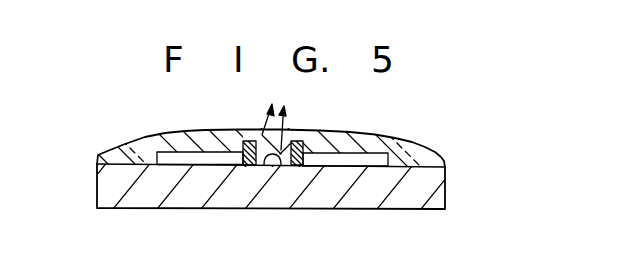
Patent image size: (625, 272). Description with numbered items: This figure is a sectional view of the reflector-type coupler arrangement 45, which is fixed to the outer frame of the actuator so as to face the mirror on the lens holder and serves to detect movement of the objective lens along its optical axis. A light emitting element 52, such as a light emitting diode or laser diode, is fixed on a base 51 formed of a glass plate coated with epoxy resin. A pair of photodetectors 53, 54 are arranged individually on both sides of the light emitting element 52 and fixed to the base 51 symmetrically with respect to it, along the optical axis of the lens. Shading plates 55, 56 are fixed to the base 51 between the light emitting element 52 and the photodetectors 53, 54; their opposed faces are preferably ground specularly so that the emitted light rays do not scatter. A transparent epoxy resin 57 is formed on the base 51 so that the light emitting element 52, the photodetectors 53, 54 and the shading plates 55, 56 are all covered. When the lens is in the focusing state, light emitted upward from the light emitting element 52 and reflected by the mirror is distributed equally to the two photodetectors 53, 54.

The coupler arrangement 45 is at (415, 135).
The base 51 is at (434, 191).
The light emitting element 52 is at (272, 165).
The photodetector 53 is at (173, 158).
The photodetector 54 is at (354, 160).
The shading plate 55 is at (248, 141).
The shading plate 56 is at (294, 141).
The transparent epoxy resin 57 is at (425, 160).